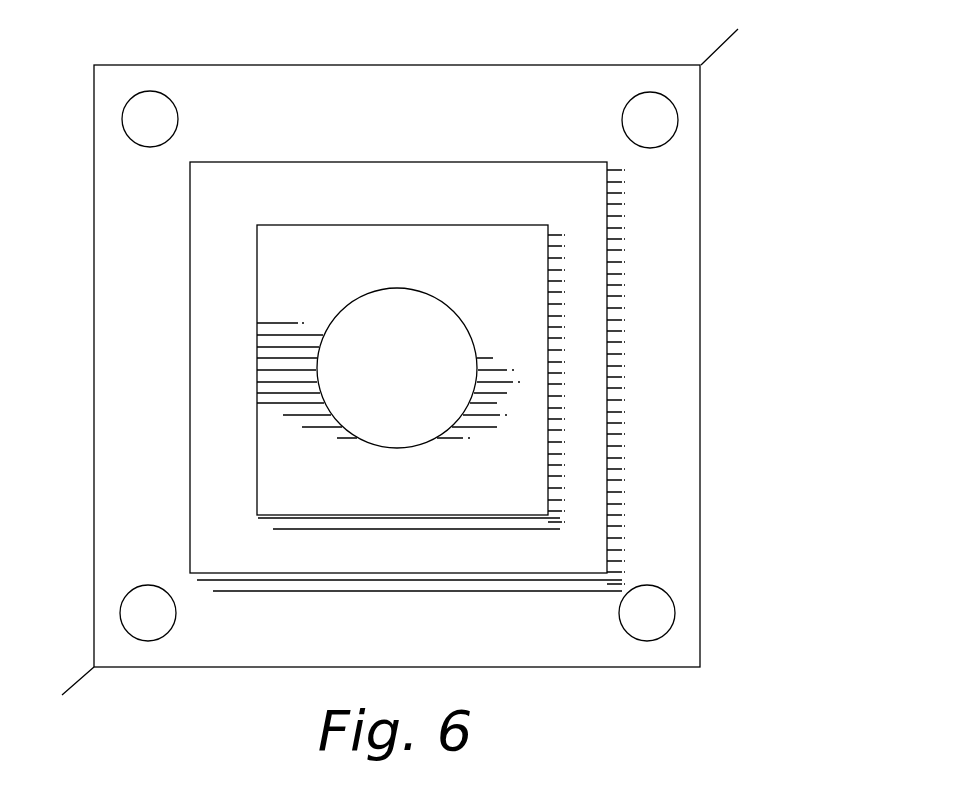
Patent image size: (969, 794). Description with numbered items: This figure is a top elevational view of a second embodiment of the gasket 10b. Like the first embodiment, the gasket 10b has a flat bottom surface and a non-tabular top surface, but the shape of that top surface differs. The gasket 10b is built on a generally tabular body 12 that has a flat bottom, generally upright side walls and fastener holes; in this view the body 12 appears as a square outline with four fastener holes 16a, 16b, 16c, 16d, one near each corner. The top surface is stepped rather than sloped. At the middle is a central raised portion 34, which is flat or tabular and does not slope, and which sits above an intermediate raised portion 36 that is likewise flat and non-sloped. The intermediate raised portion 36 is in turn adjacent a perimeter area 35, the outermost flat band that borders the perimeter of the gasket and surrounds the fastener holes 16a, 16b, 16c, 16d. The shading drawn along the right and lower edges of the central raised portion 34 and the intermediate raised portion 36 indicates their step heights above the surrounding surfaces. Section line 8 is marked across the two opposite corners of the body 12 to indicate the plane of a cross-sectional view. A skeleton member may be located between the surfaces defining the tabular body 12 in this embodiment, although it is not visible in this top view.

The section line 8- 8 is at (737, 50).
The gasket 10b is at (748, 77).
The tabular body 12 is at (678, 250).
The mounting hole 16a is at (677, 117).
The mounting hole 16b is at (646, 642).
The mounting hole 16c is at (143, 638).
The mounting hole 16d is at (123, 118).
The central raised portion 34 is at (386, 488).
The perimeter area 35 is at (393, 126).
The intermediate raised portion 36 is at (393, 207).